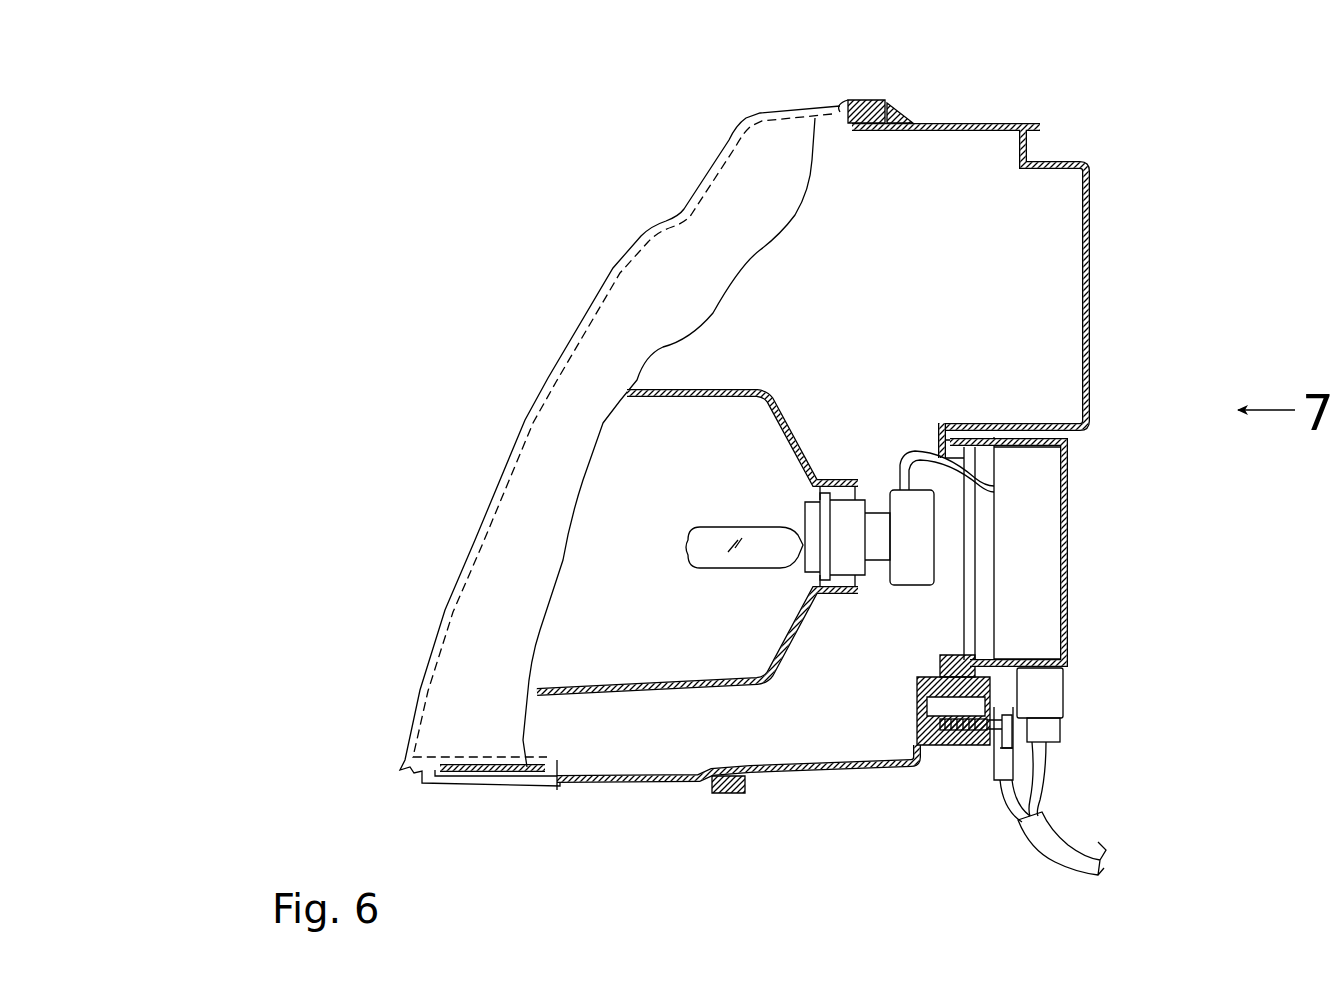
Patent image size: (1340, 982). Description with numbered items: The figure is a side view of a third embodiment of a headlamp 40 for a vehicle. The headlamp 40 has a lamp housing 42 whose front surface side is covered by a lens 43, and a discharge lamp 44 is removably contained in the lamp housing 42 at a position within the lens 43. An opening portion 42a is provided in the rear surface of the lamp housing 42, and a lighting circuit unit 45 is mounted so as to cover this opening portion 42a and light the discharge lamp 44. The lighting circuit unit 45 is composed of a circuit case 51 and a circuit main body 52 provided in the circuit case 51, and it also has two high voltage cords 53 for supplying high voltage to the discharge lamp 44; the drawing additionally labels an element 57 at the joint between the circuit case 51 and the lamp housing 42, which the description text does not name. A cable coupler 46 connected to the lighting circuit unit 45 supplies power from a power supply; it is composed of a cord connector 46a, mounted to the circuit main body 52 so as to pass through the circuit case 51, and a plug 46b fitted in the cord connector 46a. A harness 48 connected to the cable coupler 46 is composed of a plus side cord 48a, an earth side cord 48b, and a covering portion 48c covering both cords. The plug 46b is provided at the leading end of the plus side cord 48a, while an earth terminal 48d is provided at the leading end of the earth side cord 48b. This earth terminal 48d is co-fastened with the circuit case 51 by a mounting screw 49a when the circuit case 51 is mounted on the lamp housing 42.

The headlamp 40 is at (464, 162).
The lamp housing 42 is at (1086, 249).
The opening portion 42a is at (972, 612).
The lens 43 is at (535, 385).
The discharge lamp 44 is at (734, 540).
The lighting circuit unit 45 is at (1082, 514).
The cable coupler 46 is at (1124, 698).
The cord connector 46a is at (1058, 690).
The plug 46b is at (1065, 728).
The harness 48 is at (1051, 806).
The plus side cord 48a is at (1050, 778).
The earth side cord 48b is at (1003, 800).
The covering portion 48c is at (1030, 845).
The earth terminal 48d is at (992, 768).
The mounting screw 49a is at (1014, 726).
The circuit case 51 is at (1078, 613).
The circuit main body 52 is at (1036, 572).
The high voltage cord 53 is at (902, 462).
The seal 57 is at (975, 428).